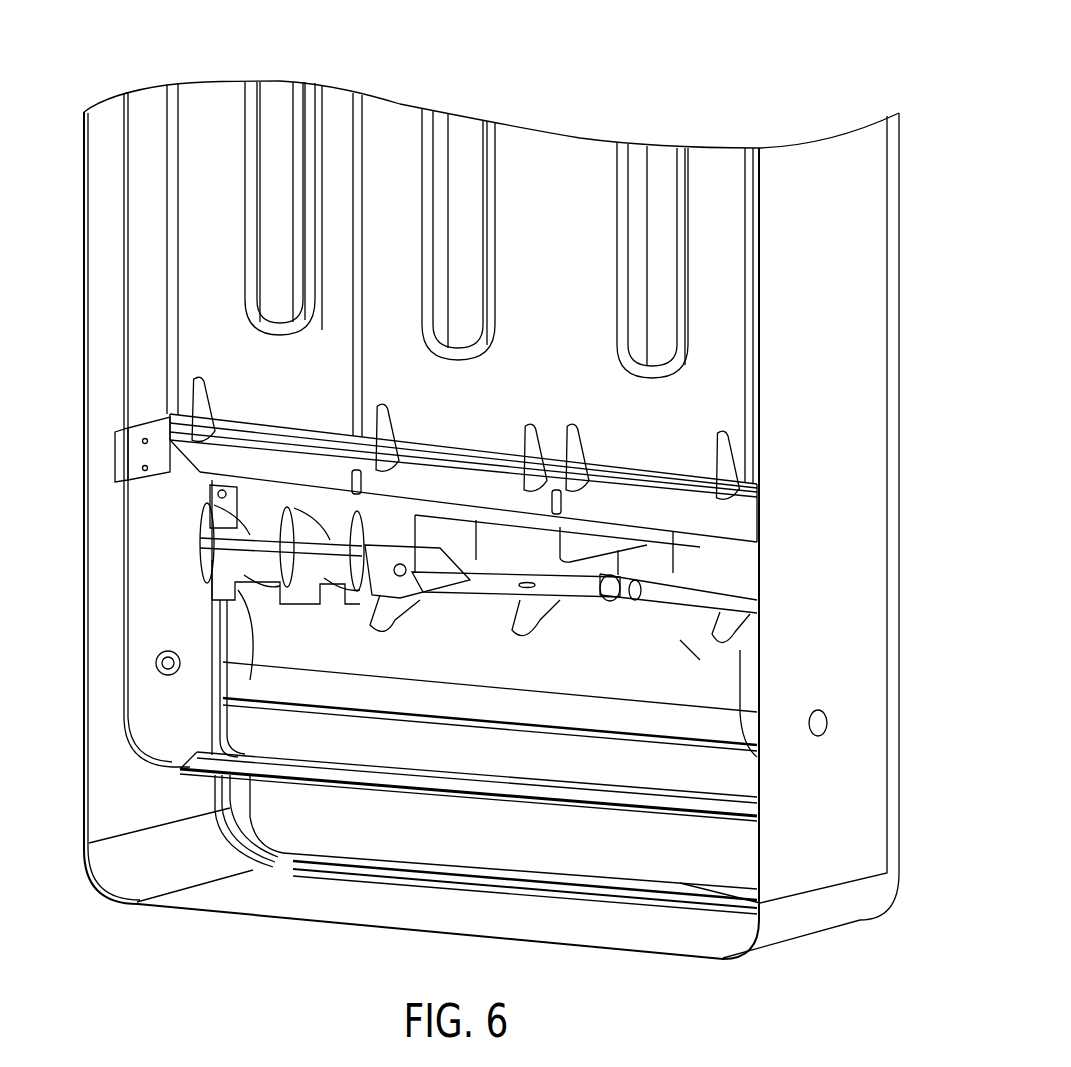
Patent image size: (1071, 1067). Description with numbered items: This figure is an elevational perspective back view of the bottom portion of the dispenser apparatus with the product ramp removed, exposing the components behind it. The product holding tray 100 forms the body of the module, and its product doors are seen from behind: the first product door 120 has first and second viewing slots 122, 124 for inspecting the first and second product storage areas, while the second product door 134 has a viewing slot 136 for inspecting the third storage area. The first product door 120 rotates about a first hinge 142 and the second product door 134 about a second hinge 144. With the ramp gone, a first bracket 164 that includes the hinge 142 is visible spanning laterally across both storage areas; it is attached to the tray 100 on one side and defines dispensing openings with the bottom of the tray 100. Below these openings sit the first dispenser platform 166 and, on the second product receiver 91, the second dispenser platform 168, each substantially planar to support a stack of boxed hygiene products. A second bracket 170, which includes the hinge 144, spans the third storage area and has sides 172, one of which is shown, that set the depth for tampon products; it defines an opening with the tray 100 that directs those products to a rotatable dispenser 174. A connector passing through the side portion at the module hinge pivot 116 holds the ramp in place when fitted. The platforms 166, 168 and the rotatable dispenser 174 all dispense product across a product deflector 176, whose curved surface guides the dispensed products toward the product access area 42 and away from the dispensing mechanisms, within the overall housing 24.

The cabinet housing 24 is at (866, 596).
The product access area 42 is at (663, 858).
The second product receiver 91 is at (485, 530).
The product holding tray 100 is at (143, 595).
The module hinge pivot 116 is at (838, 724).
The first product door 120 is at (725, 347).
The first viewing slot 122 is at (663, 165).
The second viewing slot 124 is at (460, 140).
The second product door 134 is at (335, 170).
The viewing slot 136 is at (285, 120).
The first hinge 142 is at (730, 460).
The second hinge 144 is at (225, 432).
The first bracket 164 is at (738, 525).
The first dispenser platform 166 is at (700, 590).
The second dispenser platform 168 is at (473, 565).
The second bracket 170 is at (187, 463).
The side 172 is at (140, 456).
The rotatable dispenser 174 is at (260, 590).
The product deflector 176 is at (680, 640).